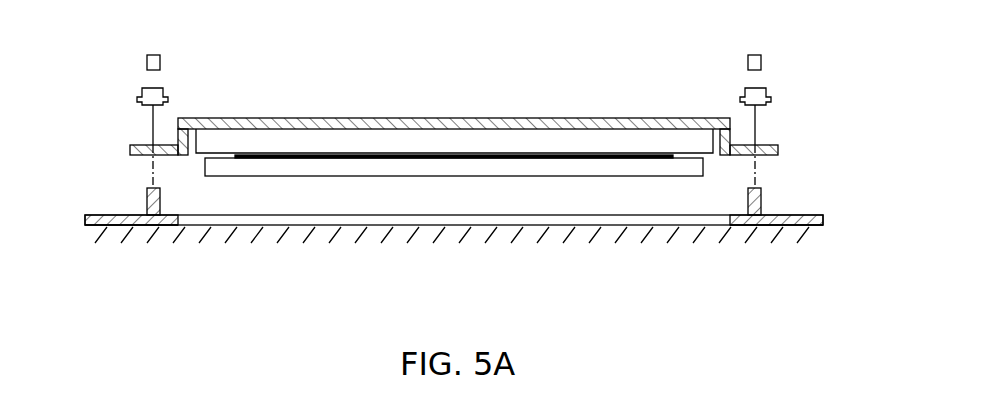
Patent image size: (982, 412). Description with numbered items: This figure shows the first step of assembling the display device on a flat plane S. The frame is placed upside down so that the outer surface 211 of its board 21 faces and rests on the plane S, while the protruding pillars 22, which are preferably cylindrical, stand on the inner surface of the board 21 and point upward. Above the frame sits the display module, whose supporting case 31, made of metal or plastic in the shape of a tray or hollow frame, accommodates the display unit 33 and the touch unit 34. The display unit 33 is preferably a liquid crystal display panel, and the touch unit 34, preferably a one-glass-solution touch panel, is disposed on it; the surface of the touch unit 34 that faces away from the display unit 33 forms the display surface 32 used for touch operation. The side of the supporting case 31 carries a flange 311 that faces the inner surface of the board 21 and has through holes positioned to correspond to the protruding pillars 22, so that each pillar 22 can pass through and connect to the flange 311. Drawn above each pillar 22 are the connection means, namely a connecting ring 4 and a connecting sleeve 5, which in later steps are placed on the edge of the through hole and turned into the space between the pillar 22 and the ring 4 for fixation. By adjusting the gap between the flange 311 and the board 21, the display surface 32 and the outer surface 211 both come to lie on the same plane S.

The connecting ring 4 is at (165, 95).
The connecting sleeve 5 is at (161, 62).
The board 21 is at (83, 217).
The protruding pillar 22 is at (151, 139).
The supporting case 31 is at (246, 121).
The display surface 32 is at (476, 180).
The display unit 33 is at (525, 137).
The touch unit 34 is at (437, 168).
The outer surface 211 is at (134, 228).
The flange 311 is at (126, 150).
The plane S is at (806, 232).